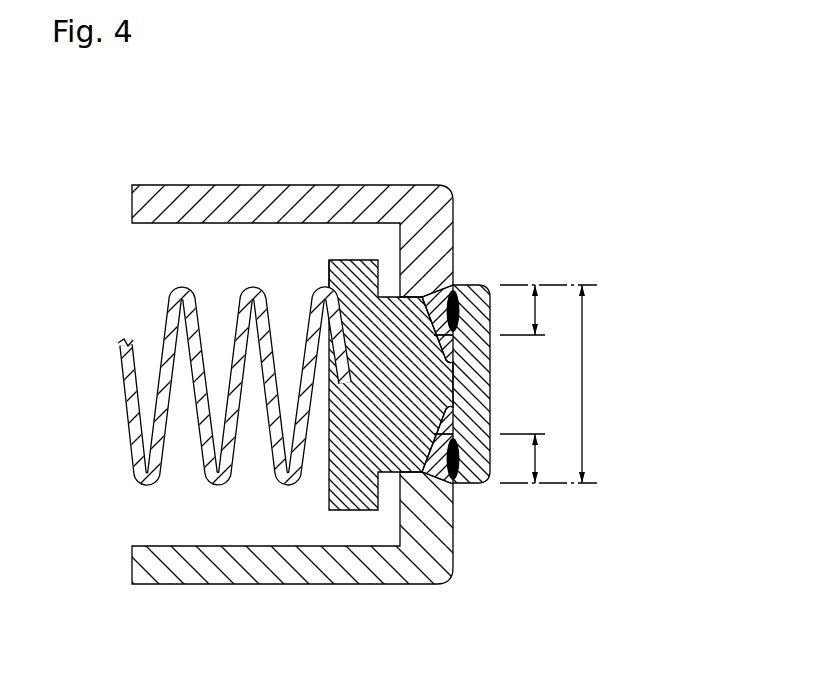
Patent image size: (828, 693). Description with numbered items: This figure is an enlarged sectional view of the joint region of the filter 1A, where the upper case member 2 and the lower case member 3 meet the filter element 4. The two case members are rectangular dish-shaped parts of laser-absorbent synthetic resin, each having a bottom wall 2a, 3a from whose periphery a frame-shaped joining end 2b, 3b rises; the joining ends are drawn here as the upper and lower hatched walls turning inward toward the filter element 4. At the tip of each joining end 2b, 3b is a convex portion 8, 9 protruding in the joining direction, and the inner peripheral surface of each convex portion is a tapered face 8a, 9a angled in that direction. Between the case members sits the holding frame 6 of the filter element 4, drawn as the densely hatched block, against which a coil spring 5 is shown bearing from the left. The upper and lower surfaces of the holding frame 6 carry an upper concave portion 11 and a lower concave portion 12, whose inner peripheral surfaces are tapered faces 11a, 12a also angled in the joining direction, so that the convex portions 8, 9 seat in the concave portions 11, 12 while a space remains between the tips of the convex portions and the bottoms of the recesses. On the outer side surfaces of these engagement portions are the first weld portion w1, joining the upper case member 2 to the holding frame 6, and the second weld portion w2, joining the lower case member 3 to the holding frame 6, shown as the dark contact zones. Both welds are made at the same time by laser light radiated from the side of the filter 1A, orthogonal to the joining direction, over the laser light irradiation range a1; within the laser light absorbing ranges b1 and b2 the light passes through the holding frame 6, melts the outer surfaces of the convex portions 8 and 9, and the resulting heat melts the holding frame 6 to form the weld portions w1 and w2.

The filter 1A is at (576, 202).
The upper case member 2 is at (161, 183).
The bottom wall 2a is at (205, 195).
The joining end 2b is at (445, 212).
The lower case member 3 is at (187, 597).
The bottom wall 3a is at (253, 575).
The joining end 3b is at (445, 565).
The filter element 4 is at (344, 257).
The coil spring 5 is at (184, 300).
The holding frame 6 is at (328, 273).
The convex portion 8 is at (439, 290).
The tapered face 8a is at (408, 297).
The convex portion 9 is at (428, 508).
The tapered face 9a is at (438, 458).
The upper concave portion 11 is at (430, 297).
The tapered face 11a is at (426, 208).
The lower concave portion 12 is at (430, 513).
The tapered face 12a is at (411, 547).
The first weld portion w1 is at (458, 292).
The second weld portion w2 is at (459, 458).
The laser light irradiation range a1 is at (583, 373).
The laser light absorbing range b1 is at (537, 310).
The laser light absorbing range b2 is at (537, 460).